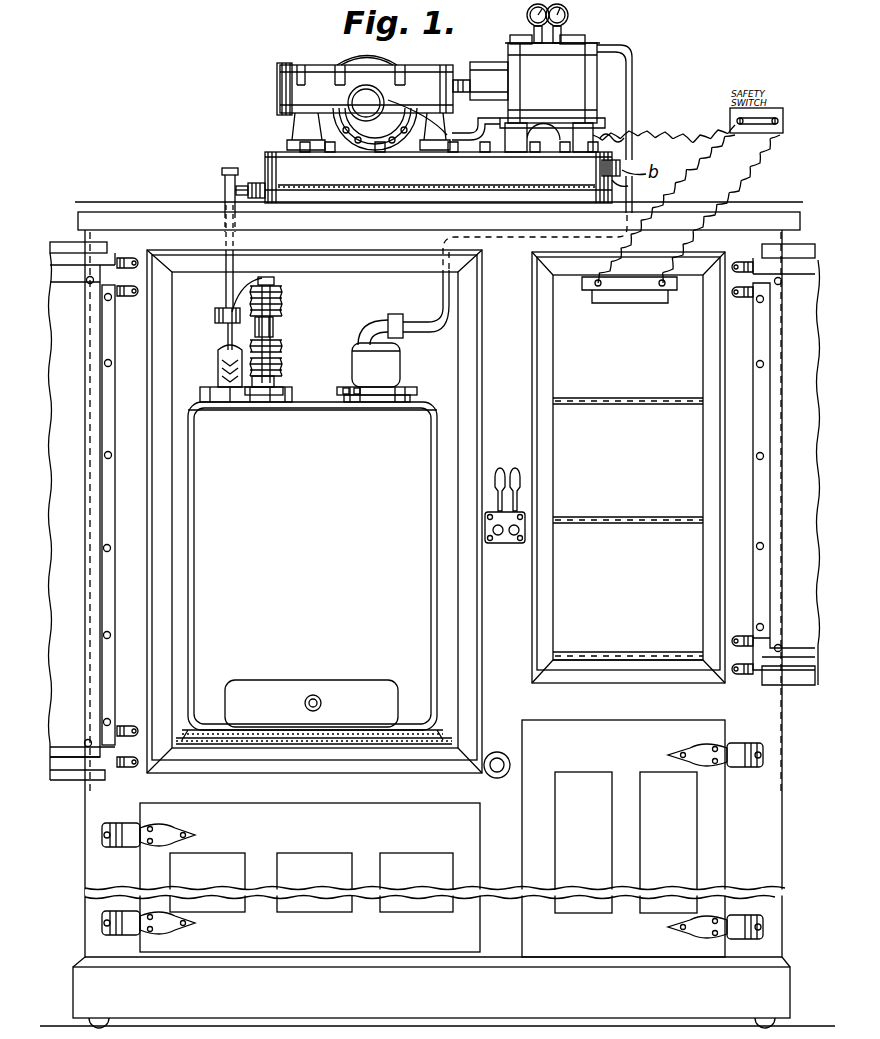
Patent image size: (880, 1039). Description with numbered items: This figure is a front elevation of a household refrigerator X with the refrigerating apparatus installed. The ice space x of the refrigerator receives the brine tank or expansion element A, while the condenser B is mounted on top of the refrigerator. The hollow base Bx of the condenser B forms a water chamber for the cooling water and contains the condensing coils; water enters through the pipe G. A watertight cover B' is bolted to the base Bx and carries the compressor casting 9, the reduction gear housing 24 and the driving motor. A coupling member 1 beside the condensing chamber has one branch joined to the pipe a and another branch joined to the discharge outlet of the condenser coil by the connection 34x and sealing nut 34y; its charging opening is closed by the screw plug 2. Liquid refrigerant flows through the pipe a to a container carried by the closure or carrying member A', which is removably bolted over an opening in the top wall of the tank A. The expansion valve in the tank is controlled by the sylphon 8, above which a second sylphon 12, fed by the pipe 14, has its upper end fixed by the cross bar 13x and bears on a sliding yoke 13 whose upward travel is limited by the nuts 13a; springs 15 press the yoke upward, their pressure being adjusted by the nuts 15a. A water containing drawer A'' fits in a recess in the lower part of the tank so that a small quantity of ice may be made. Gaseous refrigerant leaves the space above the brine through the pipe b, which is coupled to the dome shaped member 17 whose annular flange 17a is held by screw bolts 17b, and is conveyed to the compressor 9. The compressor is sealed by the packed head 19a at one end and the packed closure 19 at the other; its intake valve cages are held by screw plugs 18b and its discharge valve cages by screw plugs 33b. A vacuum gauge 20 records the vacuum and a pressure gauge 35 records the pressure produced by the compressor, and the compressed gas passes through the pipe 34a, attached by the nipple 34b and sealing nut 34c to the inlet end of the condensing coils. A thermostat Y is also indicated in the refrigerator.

The coupling member 1 is at (225, 190).
The screw plug 2 is at (222, 171).
The sylphon 8 is at (278, 362).
The compressor 9 is at (552, 97).
The bellows or sylphon 12 is at (276, 304).
The sliding yoke 13 is at (274, 333).
The nuts 13a is at (278, 318).
The cross bar 13x is at (274, 291).
The pipe 14 is at (228, 333).
The springs 15 is at (278, 351).
The nuts 15a is at (276, 380).
The dome shaped member 17 is at (385, 360).
The annular flange 17a is at (408, 393).
The screw bolts 17b is at (357, 396).
The screw plugs 18b is at (582, 42).
The closure 19 is at (486, 76).
The head 19a is at (626, 86).
The vacuum gauge 20 is at (569, 12).
The reduction gear housing 24 is at (300, 90).
The screw plugs 33b is at (512, 42).
The pipe 34a is at (645, 133).
The nipple 34b is at (612, 148).
The sealing nut 34c is at (626, 190).
The connection 34x is at (256, 183).
The sealing nut 34y is at (240, 186).
The pressure gauge 35 is at (527, 12).
The brine tank A is at (314, 573).
The carrying member A' is at (236, 373).
The water containing drawer A'' is at (311, 683).
The condenser B is at (430, 147).
The watertight cover B' is at (449, 169).
The base Bx is at (432, 196).
The pipe G is at (472, 132).
The refrigerator X is at (712, 213).
The thermostat Y is at (630, 293).
The pipe a is at (226, 293).
The pipe b is at (418, 324).
The space for the ice x is at (369, 296).